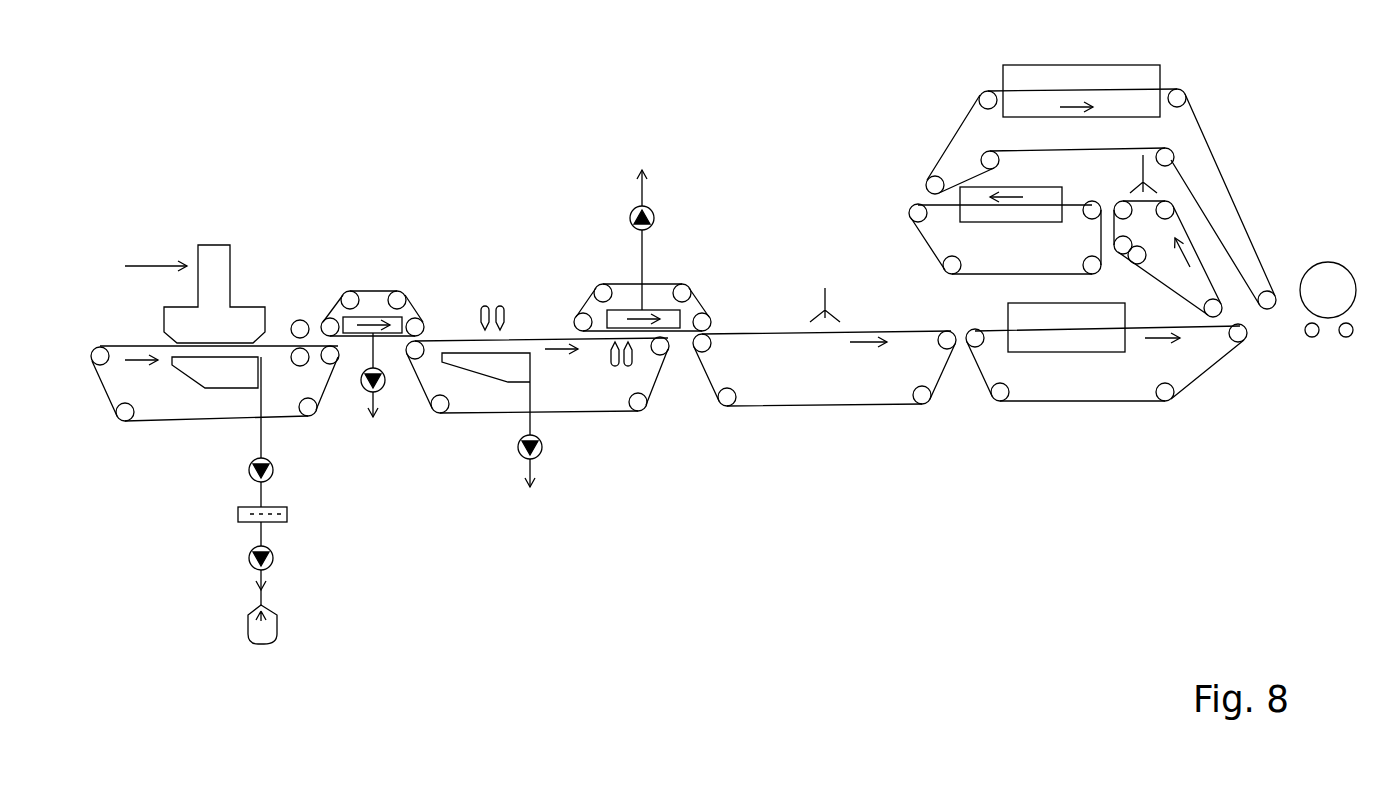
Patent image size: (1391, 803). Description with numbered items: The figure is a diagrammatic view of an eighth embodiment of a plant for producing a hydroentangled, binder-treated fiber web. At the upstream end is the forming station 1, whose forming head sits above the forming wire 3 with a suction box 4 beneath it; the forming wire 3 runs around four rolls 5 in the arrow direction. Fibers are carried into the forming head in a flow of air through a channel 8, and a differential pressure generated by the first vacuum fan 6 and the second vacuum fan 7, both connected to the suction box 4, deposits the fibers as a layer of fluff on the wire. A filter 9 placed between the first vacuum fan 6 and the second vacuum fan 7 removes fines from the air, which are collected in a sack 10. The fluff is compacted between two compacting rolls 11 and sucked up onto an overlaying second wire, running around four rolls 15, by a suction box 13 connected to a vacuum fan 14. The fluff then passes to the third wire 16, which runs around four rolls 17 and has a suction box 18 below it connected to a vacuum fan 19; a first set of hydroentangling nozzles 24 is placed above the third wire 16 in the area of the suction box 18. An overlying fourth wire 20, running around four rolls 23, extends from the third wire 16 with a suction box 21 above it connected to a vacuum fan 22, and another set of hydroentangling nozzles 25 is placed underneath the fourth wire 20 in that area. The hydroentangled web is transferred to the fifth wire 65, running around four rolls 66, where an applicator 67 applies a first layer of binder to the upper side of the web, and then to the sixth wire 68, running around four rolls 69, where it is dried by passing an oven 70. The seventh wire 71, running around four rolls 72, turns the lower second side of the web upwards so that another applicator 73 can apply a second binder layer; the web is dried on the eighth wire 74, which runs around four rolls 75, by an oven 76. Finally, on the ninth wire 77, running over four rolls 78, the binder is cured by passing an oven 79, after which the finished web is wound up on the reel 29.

The forming station 1 is at (210, 238).
The forming wire 3 is at (118, 348).
The suction box 4 is at (218, 390).
The rolls 5 is at (91, 357).
The first vacuum fan 6 is at (248, 470).
The second vacuum fan 7 is at (248, 561).
The channel 8 is at (140, 264).
The filter 9 is at (237, 517).
The sack 10 is at (248, 638).
The compacting rolls 11 is at (294, 320).
The suction box 13 is at (407, 308).
The vacuum fan 14 is at (357, 388).
The rolls 15 is at (347, 289).
The third wire 16 is at (538, 336).
The rolls 17 is at (647, 411).
The suction box 18 is at (485, 378).
The vacuum fan 19 is at (547, 447).
The fourth wire 20 is at (622, 279).
The suction box 21 is at (660, 303).
The vacuum fan 22 is at (655, 210).
The rolls 23 is at (710, 318).
The first set of hydroentangling nozzles 24 is at (474, 312).
The hydroentangling nozzles 25 is at (626, 368).
The reel 29 is at (1332, 262).
The fifth wire 65 is at (743, 328).
The rolls 66 is at (722, 413).
The applicator 67 is at (831, 313).
The sixth wire 68 is at (990, 316).
The rolls 69 is at (992, 416).
The oven 70 is at (1083, 353).
The seventh wire 71 is at (1168, 292).
The rolls 72 is at (1140, 265).
The applicator 73 is at (1138, 168).
The eighth wire 74 is at (928, 203).
The rolls 75 is at (911, 228).
The oven 76 is at (1022, 222).
The ninth wire 77 is at (960, 120).
The rolls 78 is at (983, 91).
The oven 79 is at (1073, 60).